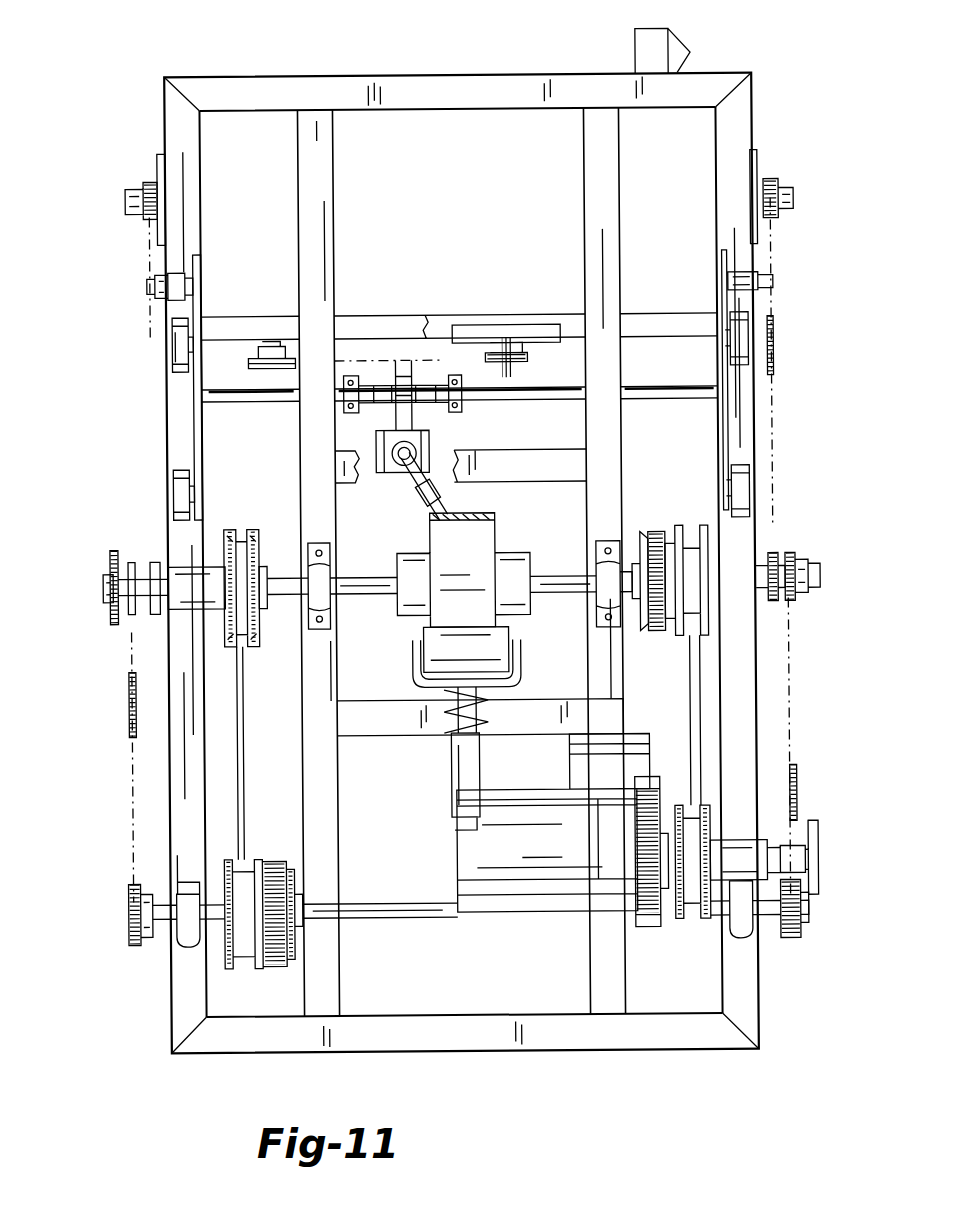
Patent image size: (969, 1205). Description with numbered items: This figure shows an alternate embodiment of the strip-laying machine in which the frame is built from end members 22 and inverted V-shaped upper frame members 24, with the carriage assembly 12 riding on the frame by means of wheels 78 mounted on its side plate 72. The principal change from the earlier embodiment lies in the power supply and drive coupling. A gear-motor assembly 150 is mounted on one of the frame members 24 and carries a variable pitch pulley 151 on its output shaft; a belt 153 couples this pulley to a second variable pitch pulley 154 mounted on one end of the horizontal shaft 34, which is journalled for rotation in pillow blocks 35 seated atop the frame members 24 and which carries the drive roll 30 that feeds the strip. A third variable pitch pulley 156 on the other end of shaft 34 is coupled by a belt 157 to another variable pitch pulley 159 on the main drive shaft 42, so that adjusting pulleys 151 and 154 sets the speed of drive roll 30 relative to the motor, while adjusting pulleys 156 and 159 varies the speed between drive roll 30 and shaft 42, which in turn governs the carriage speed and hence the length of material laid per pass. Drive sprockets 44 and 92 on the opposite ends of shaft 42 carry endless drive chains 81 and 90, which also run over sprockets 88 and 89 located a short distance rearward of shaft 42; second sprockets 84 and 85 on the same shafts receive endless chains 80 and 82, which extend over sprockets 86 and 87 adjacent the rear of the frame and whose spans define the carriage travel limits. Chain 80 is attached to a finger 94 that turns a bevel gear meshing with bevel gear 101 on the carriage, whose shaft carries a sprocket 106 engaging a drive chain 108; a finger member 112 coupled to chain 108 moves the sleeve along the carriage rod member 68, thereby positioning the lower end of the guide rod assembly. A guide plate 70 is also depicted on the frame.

The end member 22 is at (471, 78).
The frame member 24 is at (608, 666).
The carriage assembly 12 is at (515, 304).
The drive roll 30 is at (512, 622).
The horizontal shaft 34 is at (365, 592).
The pillow block 35 is at (325, 572).
The main drive shaft 42 is at (373, 905).
The drive sprocket 44 is at (128, 912).
The rod member 68 is at (513, 400).
The guide plate 70 is at (200, 444).
The side plate 72 is at (722, 418).
The wheel 78 is at (175, 346).
The chain 80 is at (774, 444).
The endless drive chain 81 is at (122, 770).
The endless chain 82 is at (150, 455).
The second sprocket 84 is at (775, 566).
The second sprocket 85 is at (121, 566).
The sprocket 86 is at (770, 182).
The sprocket 87 is at (142, 190).
The sprocket 88 is at (118, 602).
The sprocket 89 is at (792, 604).
The endless drive chain 90 is at (796, 700).
The drive sprocket 92 is at (800, 922).
The finger 94 is at (775, 282).
The bevel gear 101 is at (268, 362).
The sprocket 106 is at (527, 358).
The drive chain 108 is at (361, 358).
The finger member 112 is at (415, 358).
The gear-motor assembly 150 is at (555, 912).
The variable pitch pulley 151 is at (706, 920).
The belt 153 is at (700, 777).
The variable pitch pulley 154 is at (650, 536).
The variable pitch pulley 156 is at (258, 540).
The belt 157 is at (247, 746).
The variable pitch pulley 159 is at (258, 858).